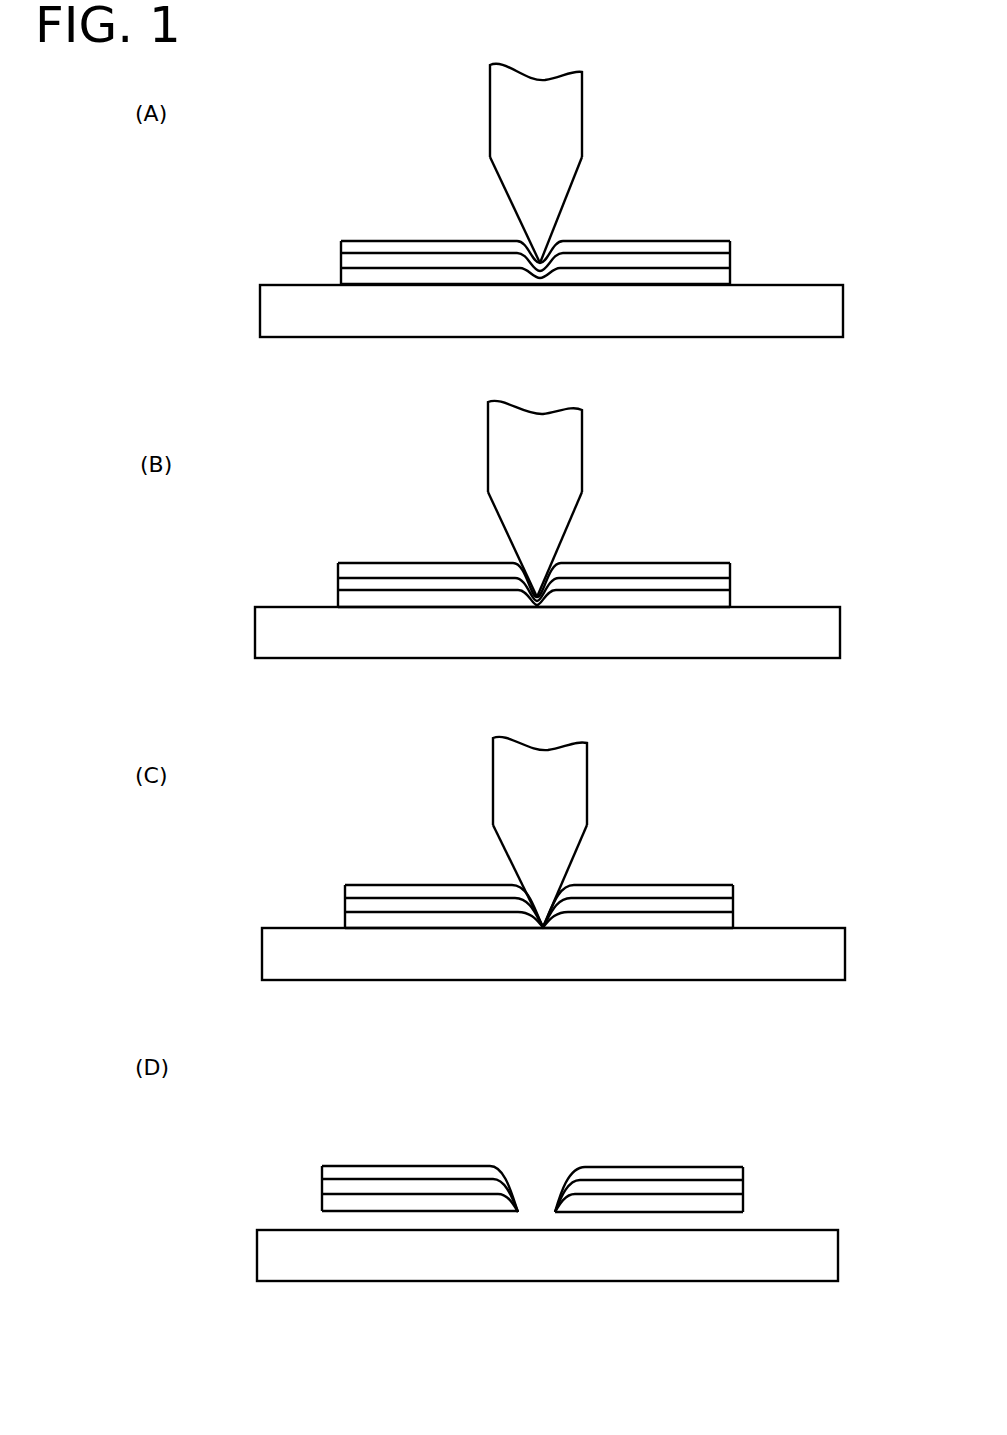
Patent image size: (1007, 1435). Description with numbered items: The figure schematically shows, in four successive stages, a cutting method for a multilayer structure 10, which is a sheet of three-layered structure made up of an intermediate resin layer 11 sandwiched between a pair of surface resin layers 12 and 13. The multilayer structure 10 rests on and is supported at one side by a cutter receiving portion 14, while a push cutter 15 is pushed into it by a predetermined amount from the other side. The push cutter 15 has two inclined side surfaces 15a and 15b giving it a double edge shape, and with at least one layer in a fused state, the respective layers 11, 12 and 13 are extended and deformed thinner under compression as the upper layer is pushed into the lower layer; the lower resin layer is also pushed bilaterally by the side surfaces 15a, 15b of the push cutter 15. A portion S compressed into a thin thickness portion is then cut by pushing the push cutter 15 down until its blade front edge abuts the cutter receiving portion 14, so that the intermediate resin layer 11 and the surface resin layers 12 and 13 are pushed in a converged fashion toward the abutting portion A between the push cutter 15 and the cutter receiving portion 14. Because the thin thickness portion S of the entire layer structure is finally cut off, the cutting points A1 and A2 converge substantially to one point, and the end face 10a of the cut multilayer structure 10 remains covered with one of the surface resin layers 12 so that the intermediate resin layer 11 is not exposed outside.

The multilayer structure 10 is at (587, 674).
The end face 10a is at (508, 1177).
The intermediate resin layer 11 is at (730, 253).
The surface resin layer 12 is at (730, 242).
The surface resin layer 13 is at (730, 270).
The cutter receiving portion 14 is at (260, 317).
The push cutter 15 is at (545, 495).
The side surface 15a is at (567, 193).
The side surface 15b is at (507, 200).
The thin thickness portion S is at (550, 607).
The abutting portion A is at (545, 930).
The cutting point A1 is at (553, 1213).
The cutting point A2 is at (518, 1213).